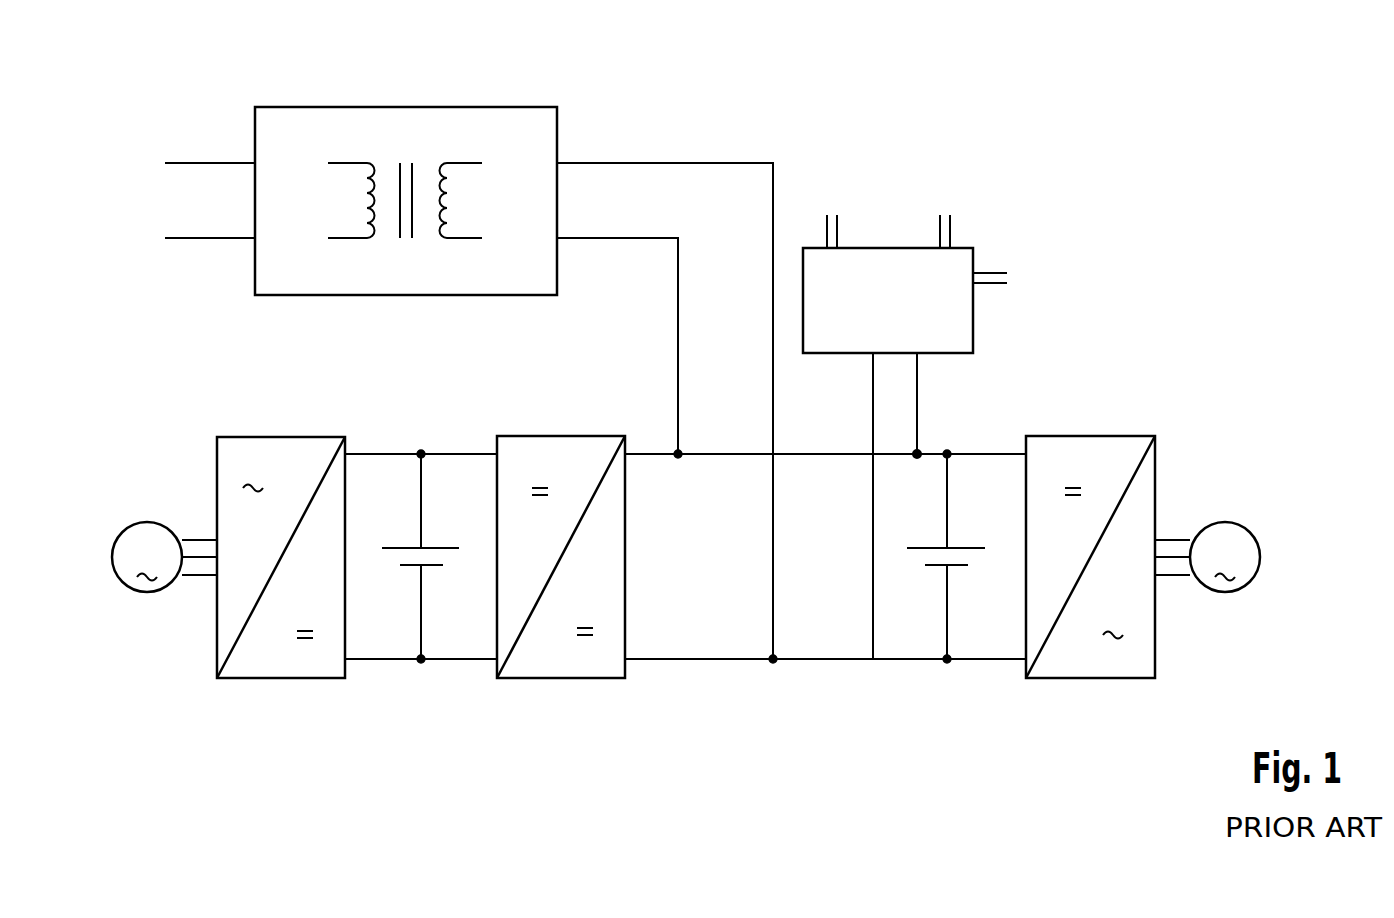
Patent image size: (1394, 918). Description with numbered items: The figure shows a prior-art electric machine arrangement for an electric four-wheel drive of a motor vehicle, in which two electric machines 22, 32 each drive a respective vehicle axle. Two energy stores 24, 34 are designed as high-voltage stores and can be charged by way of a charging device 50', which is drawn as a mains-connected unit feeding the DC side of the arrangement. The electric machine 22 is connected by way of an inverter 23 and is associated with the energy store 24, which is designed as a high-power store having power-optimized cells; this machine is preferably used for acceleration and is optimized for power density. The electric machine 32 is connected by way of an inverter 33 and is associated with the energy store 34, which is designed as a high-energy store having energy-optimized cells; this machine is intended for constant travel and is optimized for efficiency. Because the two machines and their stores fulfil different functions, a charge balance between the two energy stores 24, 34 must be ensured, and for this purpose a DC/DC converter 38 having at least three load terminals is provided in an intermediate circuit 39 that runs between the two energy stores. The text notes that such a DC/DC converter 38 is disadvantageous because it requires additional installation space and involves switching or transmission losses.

The charging device 50' is at (443, 346).
The electric machine 22 is at (112, 557).
The inverter 23 is at (297, 437).
The energy store 24 is at (447, 548).
The DC/DC converter 38 is at (568, 436).
The intermediate circuit 39 is at (683, 660).
The energy store 34 is at (980, 548).
The inverter 33 is at (1113, 436).
The electric machine 32 is at (1262, 557).